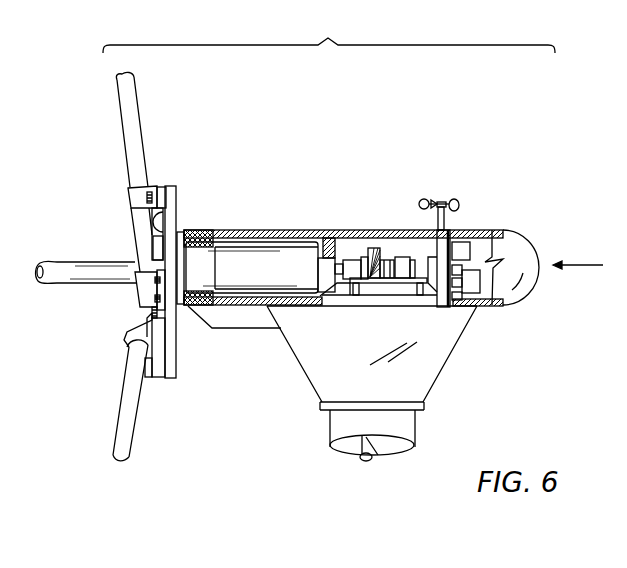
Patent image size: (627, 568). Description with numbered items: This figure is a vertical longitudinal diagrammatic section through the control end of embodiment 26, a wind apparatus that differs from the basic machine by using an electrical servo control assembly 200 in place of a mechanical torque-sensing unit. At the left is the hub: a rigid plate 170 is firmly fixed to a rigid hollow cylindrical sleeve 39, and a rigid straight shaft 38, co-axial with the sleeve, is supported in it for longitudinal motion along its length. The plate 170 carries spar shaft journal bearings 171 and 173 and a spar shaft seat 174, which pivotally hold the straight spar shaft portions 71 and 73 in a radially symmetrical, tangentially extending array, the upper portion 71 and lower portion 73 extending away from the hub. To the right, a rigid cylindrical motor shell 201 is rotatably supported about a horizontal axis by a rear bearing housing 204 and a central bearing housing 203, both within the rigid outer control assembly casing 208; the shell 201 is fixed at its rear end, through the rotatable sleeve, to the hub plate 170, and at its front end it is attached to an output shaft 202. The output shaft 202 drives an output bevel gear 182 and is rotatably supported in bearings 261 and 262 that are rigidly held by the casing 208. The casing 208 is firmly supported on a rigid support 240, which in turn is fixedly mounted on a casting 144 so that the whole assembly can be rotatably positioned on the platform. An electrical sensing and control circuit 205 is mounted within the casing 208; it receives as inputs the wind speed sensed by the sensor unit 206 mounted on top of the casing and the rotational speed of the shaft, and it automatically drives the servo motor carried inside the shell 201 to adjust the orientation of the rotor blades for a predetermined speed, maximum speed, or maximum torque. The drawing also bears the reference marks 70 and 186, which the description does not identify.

The embodiment 26 is at (329, 34).
The control assembly 200 is at (500, 161).
The spar shaft portion 71 is at (127, 98).
The spar shaft journal bearing 171 is at (135, 197).
The shaft 38 is at (43, 263).
The sleeve 39 is at (92, 263).
The spar shaft seat 174 is at (140, 288).
The spar shaft journal bearing 173 is at (127, 347).
The rigid plate 170 is at (176, 366).
The spar shaft portion 73 is at (127, 430).
The rear bearing housing 204 is at (205, 237).
The motor shell 201 is at (250, 260).
The outer control assembly casing 208 is at (288, 230).
The central bearing housing 203 is at (327, 257).
The output shaft 202 is at (350, 263).
The output bevel gear 182 is at (372, 253).
The sensor unit 206 is at (450, 202).
The electrical sensing and control circuit 205 is at (468, 250).
The wind direction arrow 70 is at (589, 267).
The bearing 261 is at (347, 283).
The bearing 262 is at (400, 282).
The rigid support 240 is at (432, 353).
The casting 144 is at (415, 426).
The spout 186 is at (375, 455).